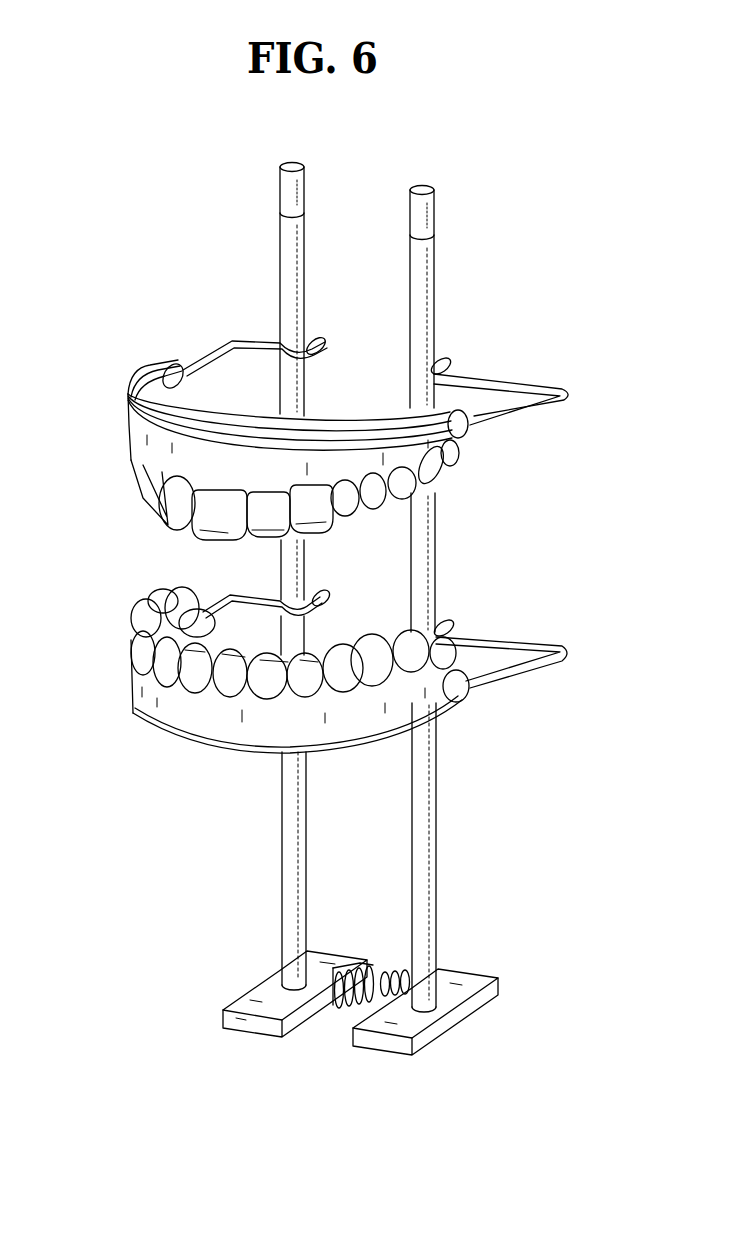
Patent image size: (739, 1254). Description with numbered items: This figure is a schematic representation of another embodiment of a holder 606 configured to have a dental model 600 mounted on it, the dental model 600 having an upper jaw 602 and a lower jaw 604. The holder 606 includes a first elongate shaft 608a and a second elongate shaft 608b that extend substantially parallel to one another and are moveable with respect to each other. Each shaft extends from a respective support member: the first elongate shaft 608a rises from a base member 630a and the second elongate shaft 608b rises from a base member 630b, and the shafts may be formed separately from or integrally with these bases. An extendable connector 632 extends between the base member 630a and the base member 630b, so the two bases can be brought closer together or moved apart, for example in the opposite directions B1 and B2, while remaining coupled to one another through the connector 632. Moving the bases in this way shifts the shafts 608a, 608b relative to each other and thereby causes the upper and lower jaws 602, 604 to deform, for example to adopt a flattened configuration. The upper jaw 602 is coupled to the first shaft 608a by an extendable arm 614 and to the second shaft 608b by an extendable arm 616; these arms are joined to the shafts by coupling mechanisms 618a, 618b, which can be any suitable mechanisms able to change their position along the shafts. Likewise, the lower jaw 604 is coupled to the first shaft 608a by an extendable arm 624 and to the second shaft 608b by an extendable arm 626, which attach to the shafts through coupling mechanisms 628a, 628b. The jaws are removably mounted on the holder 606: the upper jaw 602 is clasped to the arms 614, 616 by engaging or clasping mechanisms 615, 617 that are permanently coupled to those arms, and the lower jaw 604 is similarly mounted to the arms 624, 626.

The dental model 600 is at (74, 380).
The upper jaw 602 is at (146, 456).
The lower jaw 604 is at (194, 745).
The holder 606 is at (497, 283).
The first elongate shaft 608a is at (304, 280).
The second elongate shaft 608b is at (434, 312).
The extendable arm 614 is at (215, 338).
The clasping mechanism 615 is at (178, 366).
The extendable arm 616 is at (548, 386).
The clasping mechanism 617 is at (464, 430).
The coupling mechanism 618a is at (328, 340).
The coupling mechanism 618b is at (452, 366).
The extendable arm 624 is at (233, 592).
The extendable arm 626 is at (545, 648).
The coupling mechanism 628a is at (330, 593).
The coupling mechanism 628b is at (455, 624).
The base member 630a is at (257, 1036).
The base member 630b is at (393, 1056).
The extendable connector 632 is at (378, 968).
The direction B1 is at (230, 972).
The direction B2 is at (510, 1022).